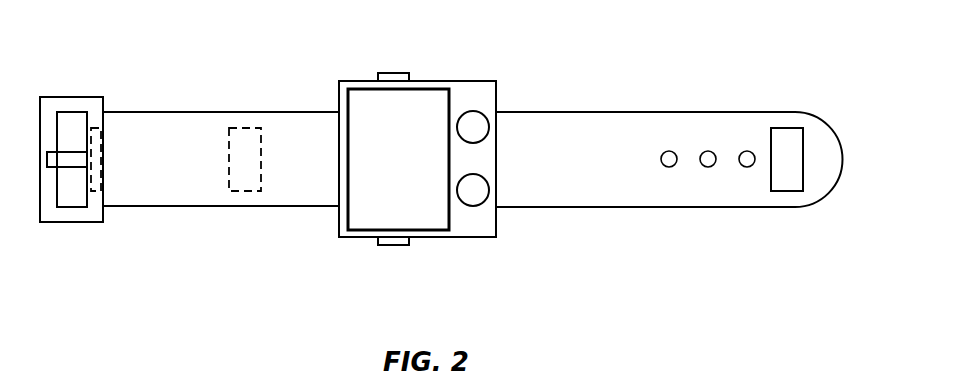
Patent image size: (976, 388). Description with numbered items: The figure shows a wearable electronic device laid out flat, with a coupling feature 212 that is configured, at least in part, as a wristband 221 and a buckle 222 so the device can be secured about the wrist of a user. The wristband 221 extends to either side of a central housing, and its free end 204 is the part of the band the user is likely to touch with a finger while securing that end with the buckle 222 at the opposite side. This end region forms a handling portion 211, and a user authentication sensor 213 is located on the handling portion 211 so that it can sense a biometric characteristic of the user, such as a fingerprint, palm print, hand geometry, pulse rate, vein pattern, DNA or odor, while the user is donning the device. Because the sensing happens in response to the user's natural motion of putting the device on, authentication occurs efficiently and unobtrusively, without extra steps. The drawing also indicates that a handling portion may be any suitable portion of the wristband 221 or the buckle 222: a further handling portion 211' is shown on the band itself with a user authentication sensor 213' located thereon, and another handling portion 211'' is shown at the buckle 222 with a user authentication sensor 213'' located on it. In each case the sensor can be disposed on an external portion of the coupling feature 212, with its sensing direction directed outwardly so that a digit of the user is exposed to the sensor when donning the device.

The end of the wristband 204 is at (444, 154).
The handling portion 211 is at (675, 153).
The handling portion 211' is at (221, 148).
The handling portion 211'' is at (96, 156).
The coupling feature 212 is at (479, 143).
The user authentication sensor 213 is at (813, 196).
The user authentication sensor 213' is at (265, 195).
The user authentication sensor 213'' is at (125, 191).
The wristband 221 is at (581, 175).
The buckle 222 is at (73, 215).